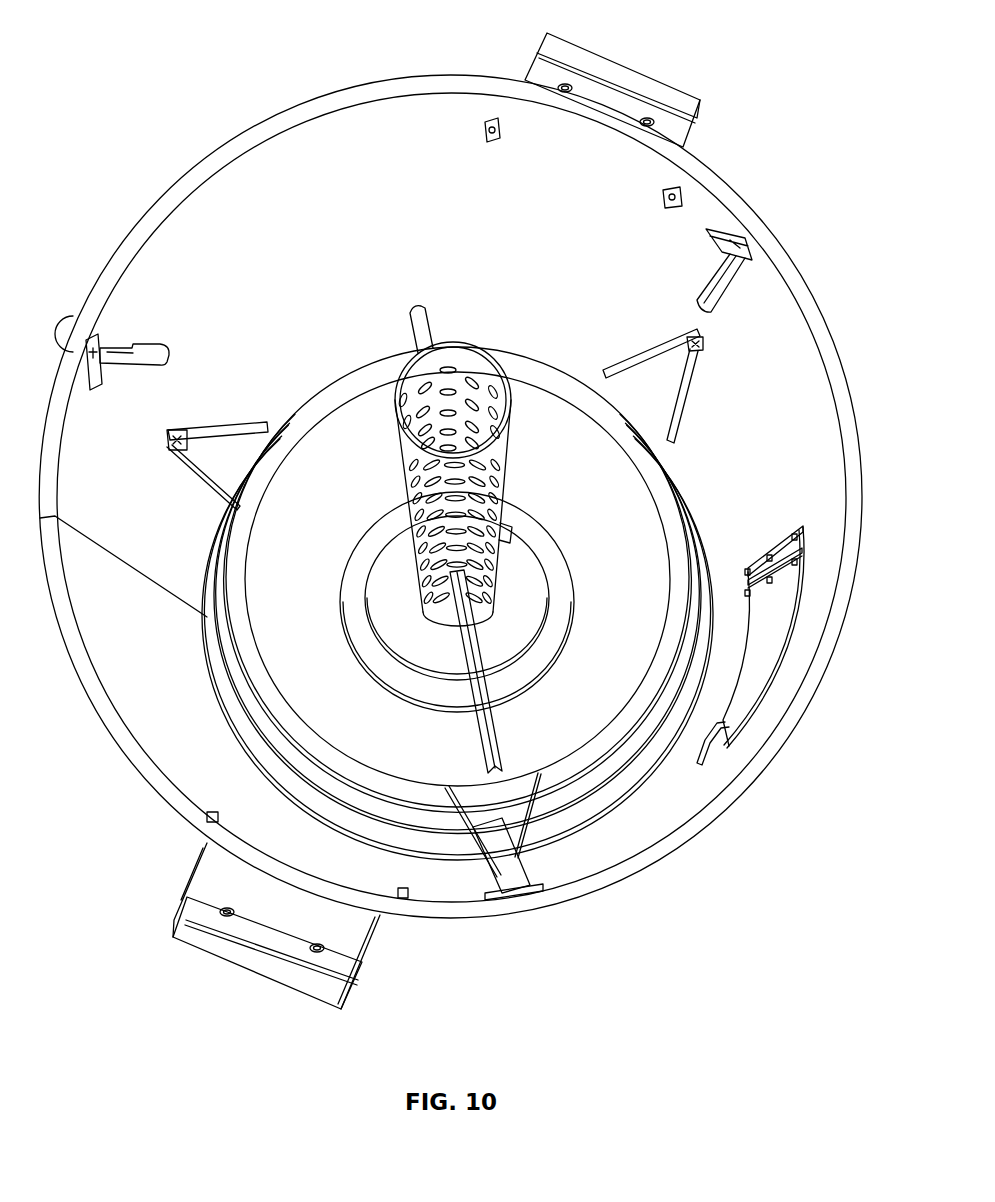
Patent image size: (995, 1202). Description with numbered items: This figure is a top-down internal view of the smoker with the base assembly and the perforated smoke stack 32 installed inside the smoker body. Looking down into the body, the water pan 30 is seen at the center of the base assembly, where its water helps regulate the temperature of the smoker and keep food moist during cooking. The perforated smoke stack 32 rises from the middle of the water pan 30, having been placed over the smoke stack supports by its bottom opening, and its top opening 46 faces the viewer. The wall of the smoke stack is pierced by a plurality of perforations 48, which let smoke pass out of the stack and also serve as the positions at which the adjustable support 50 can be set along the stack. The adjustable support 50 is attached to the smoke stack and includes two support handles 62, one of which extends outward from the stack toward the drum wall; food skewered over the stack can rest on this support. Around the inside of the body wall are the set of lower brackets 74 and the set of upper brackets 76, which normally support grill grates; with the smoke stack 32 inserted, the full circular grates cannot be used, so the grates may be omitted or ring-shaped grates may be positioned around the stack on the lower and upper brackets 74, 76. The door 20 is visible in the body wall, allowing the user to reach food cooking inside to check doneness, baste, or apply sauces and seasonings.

The door 20 is at (773, 603).
The water pan 30 is at (565, 708).
The perforated smoke stack 32 is at (410, 463).
The top opening 46 is at (460, 380).
The perforations 48 is at (497, 483).
The adjustable support 50 is at (412, 537).
The support handles 62 is at (472, 648).
The lower brackets 74 is at (700, 333).
The upper brackets 76 is at (168, 364).